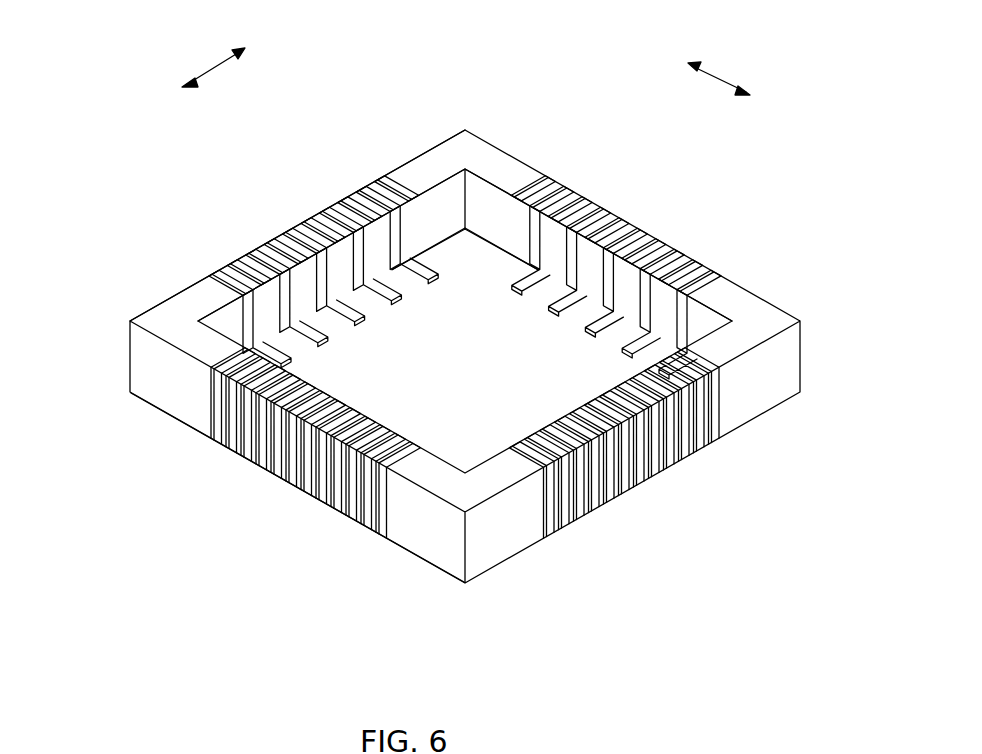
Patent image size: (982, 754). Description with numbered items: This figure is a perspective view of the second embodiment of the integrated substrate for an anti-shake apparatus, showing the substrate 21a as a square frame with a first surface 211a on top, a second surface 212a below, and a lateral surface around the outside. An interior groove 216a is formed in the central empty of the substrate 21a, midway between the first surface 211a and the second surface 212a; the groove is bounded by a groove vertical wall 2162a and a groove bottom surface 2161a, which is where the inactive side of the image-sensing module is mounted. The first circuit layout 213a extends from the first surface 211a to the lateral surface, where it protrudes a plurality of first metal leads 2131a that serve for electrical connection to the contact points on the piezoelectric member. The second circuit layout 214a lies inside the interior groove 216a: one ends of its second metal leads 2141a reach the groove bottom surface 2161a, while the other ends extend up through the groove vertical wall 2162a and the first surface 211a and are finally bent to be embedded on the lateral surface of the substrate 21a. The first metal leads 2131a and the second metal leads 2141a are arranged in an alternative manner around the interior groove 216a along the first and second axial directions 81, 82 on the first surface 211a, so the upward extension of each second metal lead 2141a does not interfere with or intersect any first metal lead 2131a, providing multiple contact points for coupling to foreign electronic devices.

The substrate 21a is at (148, 372).
The first surface 211a is at (163, 333).
The second surface 212a is at (147, 410).
The first circuit layout 213a is at (355, 184).
The second circuit layout 214a is at (400, 236).
The interior groove 216a is at (477, 428).
The groove bottom surface 2161a is at (523, 210).
The groove vertical wall 2162a is at (467, 298).
The first metal leads 2131a is at (252, 250).
The second metal leads 2141a is at (267, 243).
The first axial direction 81 is at (210, 67).
The second axial direction 82 is at (722, 75).